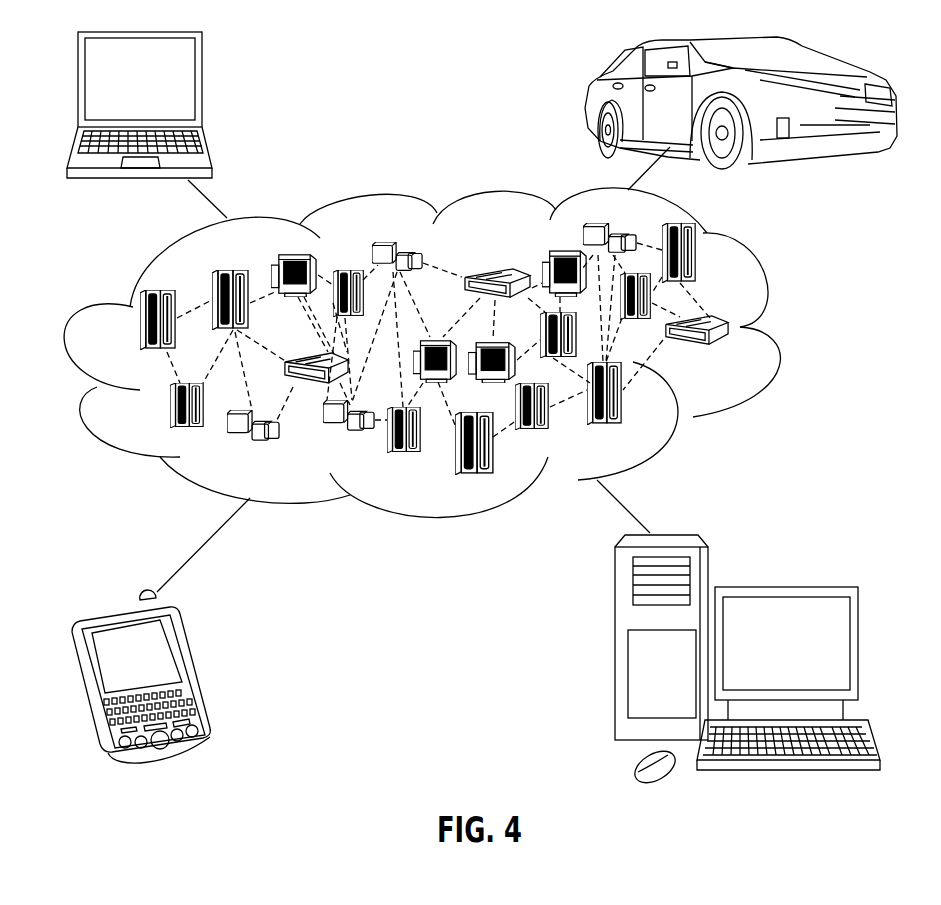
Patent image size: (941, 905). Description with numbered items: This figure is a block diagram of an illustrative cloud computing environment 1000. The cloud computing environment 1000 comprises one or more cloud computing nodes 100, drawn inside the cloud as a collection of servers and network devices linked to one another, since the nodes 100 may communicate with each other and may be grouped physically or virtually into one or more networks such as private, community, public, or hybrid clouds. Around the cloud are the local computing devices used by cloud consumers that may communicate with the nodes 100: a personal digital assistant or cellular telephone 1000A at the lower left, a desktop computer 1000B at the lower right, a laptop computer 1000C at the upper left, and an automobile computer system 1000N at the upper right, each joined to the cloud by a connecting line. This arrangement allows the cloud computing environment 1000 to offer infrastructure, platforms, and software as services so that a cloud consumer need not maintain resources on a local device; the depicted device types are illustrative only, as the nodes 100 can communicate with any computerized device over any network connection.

The laptop computer 1000C is at (202, 88).
The automobile computer system 1000N is at (590, 100).
The cloud computing environment 1000 is at (780, 328).
The cloud computing nodes 100 is at (745, 361).
The personal digital assistant or cellular telephone 1000A is at (193, 669).
The desktop computer 1000B is at (785, 586).